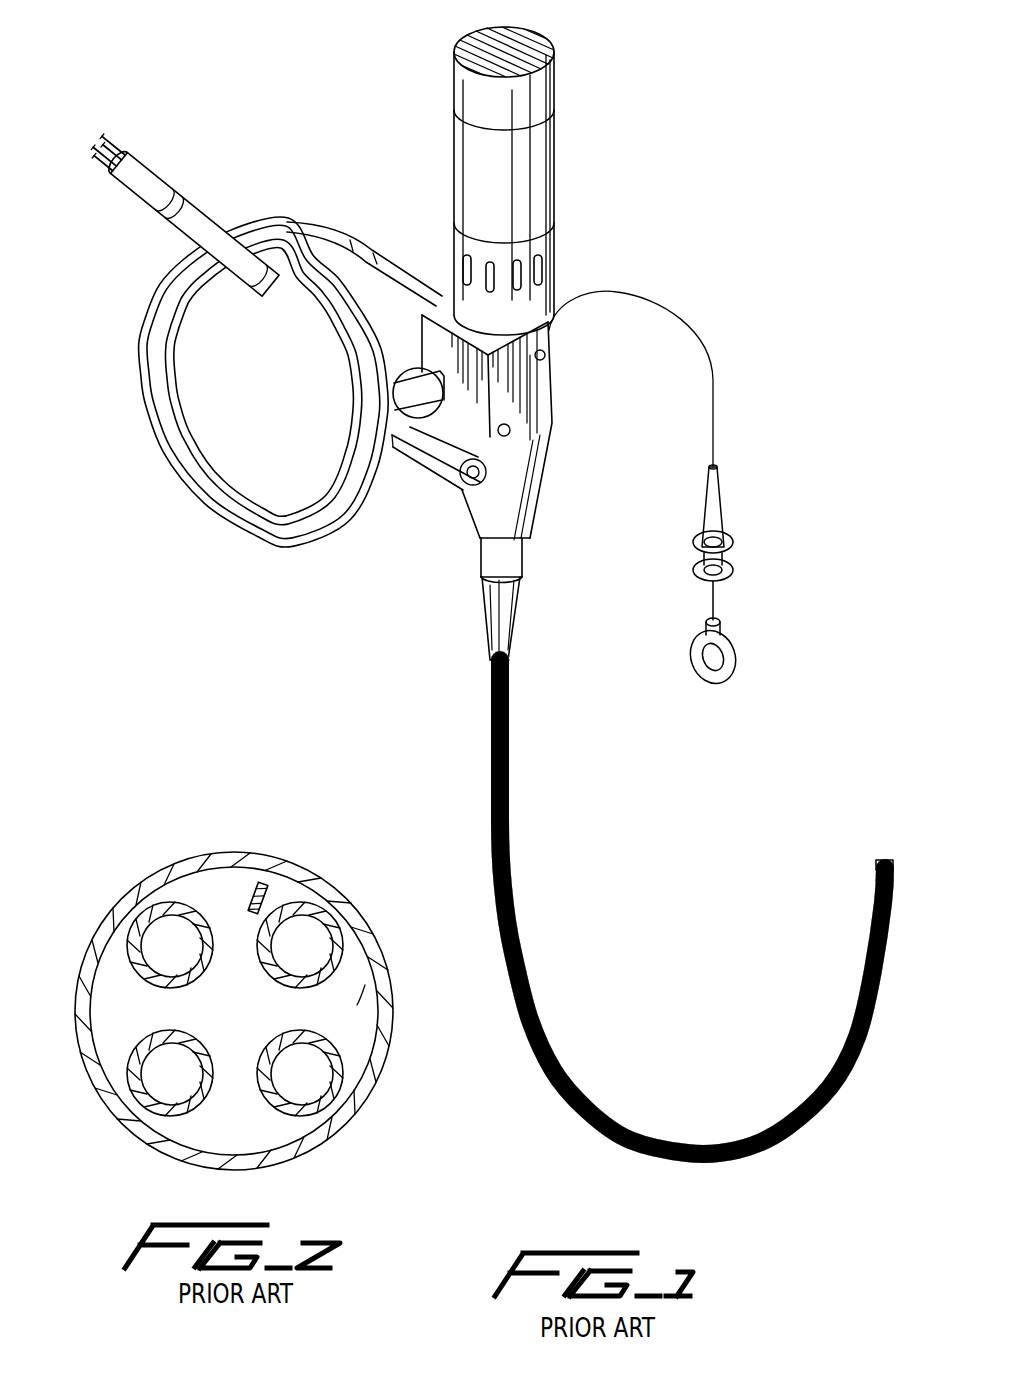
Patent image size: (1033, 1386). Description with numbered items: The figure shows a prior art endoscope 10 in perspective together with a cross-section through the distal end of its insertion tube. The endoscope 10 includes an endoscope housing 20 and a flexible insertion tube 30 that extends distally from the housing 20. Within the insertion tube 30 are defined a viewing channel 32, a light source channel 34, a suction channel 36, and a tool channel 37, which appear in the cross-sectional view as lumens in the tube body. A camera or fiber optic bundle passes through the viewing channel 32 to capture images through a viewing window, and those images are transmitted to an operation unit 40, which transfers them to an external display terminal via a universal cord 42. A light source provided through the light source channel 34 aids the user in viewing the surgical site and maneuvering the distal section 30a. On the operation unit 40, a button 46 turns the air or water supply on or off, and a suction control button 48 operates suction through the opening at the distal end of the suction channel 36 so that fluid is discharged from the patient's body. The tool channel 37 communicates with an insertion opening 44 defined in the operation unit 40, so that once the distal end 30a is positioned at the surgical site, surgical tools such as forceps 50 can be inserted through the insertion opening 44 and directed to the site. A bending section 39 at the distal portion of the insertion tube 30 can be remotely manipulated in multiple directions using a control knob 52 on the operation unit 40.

In FIG. 1, the endoscope 10 is at (292, 84).
In FIG. 1, the endoscope housing 20 is at (440, 223).
In FIG. 1, the flexible insertion tube 30 is at (548, 1031).
In FIG. 1, the distal section 30a is at (888, 856).
In FIG. 2, the distal section 30a is at (357, 1005).
In FIG. 2, the viewing channel 32 is at (331, 912).
In FIG. 2, the light source channel 34 is at (321, 1108).
In FIG. 2, the suction channel 36 is at (262, 884).
In FIG. 2, the tool channel 37 is at (135, 925).
In FIG. 1, the bending section 39 is at (878, 868).
In FIG. 1, the operation unit 40 is at (553, 512).
In FIG. 1, the universal cord 42 is at (298, 220).
In FIG. 1, the insertion opening 44 is at (548, 362).
In FIG. 1, the button 46 is at (468, 486).
In FIG. 1, the suction control button 48 is at (511, 436).
In FIG. 1, the forceps 50 is at (722, 515).
In FIG. 1, the control knob 52 is at (405, 395).